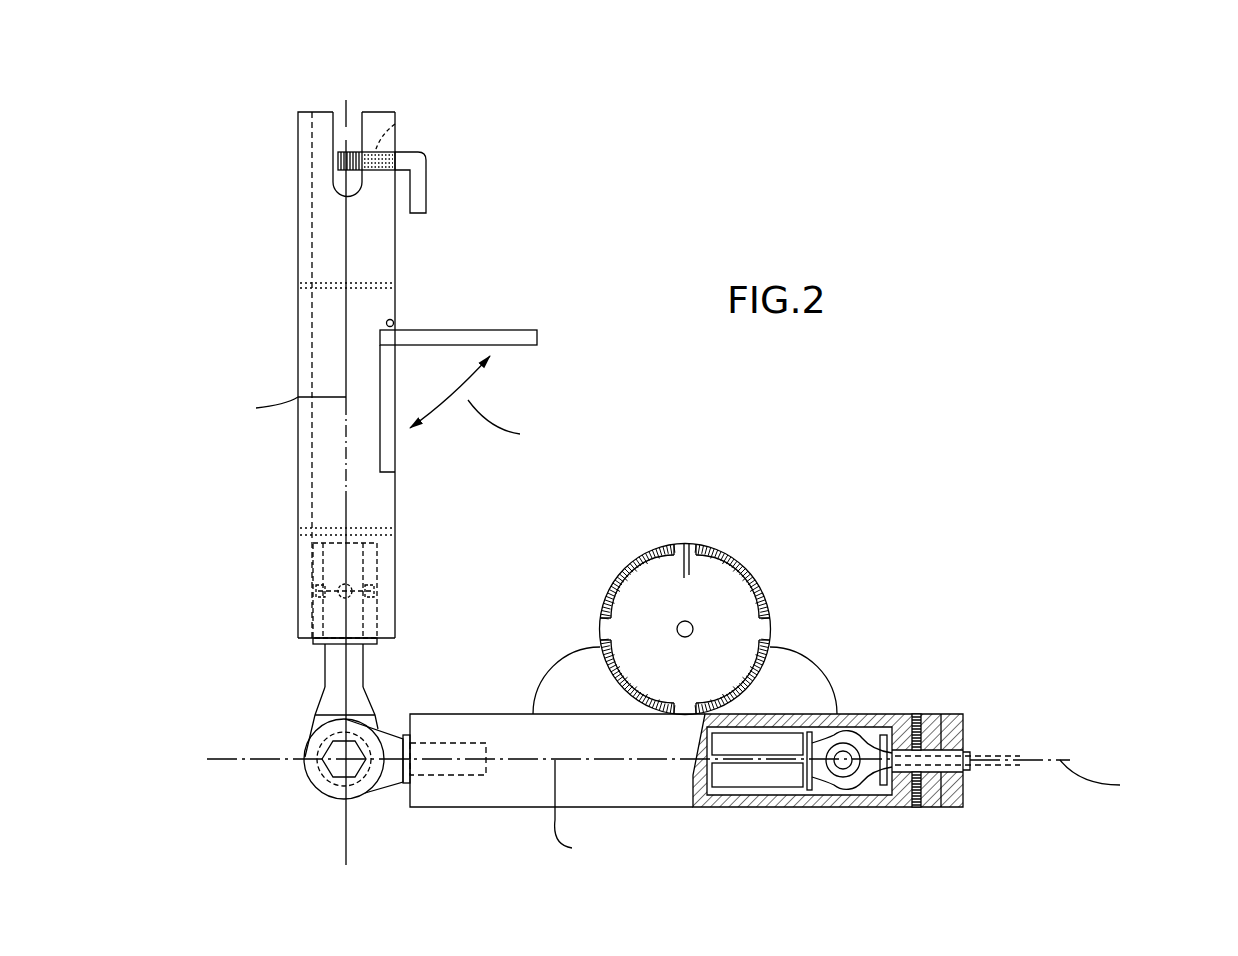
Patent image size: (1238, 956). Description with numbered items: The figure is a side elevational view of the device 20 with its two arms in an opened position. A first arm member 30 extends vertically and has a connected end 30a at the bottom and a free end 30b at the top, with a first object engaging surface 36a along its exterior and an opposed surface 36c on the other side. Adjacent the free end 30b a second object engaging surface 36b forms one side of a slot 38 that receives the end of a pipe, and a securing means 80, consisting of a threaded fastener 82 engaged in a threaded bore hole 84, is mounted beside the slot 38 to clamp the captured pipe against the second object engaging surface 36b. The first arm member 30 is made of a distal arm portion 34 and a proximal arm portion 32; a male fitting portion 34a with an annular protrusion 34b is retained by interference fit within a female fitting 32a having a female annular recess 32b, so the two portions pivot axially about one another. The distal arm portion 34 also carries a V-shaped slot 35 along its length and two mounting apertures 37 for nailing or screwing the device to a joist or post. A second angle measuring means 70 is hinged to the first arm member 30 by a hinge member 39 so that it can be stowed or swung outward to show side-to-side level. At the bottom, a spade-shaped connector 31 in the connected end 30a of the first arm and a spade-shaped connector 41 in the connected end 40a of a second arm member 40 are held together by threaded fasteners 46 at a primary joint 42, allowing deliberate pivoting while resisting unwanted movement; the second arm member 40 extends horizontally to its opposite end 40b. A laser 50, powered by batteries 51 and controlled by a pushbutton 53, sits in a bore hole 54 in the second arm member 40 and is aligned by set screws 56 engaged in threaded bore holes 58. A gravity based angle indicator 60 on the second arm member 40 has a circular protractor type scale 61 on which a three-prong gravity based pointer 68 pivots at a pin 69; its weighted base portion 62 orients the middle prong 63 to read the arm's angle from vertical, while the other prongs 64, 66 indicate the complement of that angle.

The device 20 is at (856, 418).
The first arm member 30 is at (323, 338).
The connected end 30a is at (377, 720).
The free end 30b is at (380, 112).
The spade-shaped connector 31 is at (315, 721).
The proximal arm portion 32 is at (352, 657).
The female fitting 32a is at (372, 626).
The female annular recess 32b is at (373, 592).
The distal arm portion 34 is at (385, 497).
The male fitting portion 34a is at (357, 568).
The annular protrusion 34b is at (352, 597).
The V-shaped slot 35 is at (302, 247).
The first object engaging surface 36a is at (298, 468).
The second object engaging surface 36b is at (336, 136).
The opposed surface 36c is at (395, 470).
The mounting apertures 37 is at (403, 280).
The slot 38 is at (343, 126).
The hinge member 39 is at (393, 323).
The second arm member 40 is at (643, 790).
The connected end 40a is at (410, 800).
The right end of beam / housing 40b is at (963, 790).
The spade-shaped connector 41 is at (368, 787).
The primary joint 42 is at (268, 812).
The threaded fasteners 46 is at (325, 768).
The laser 50 is at (975, 757).
The batteries 51 is at (745, 778).
The pushbutton 53 is at (843, 762).
The bore hole 54 is at (940, 720).
The set screws 56 is at (917, 730).
The threaded bore holes 58 is at (912, 750).
The gravity based angle indicator 60 is at (740, 586).
The circular protractor type scale 61 is at (630, 555).
The weighted base portion 62 is at (660, 712).
The middle prong 63 is at (700, 545).
The prong 64 is at (630, 629).
The prong 66 is at (752, 629).
The 3-prong gravity based pointer 68 is at (765, 613).
The pin 69 is at (685, 637).
The second angle measuring means 70 is at (518, 343).
The securing means 80 is at (445, 192).
The threaded fastener 82 is at (417, 160).
The threaded bore hole 84 is at (395, 128).